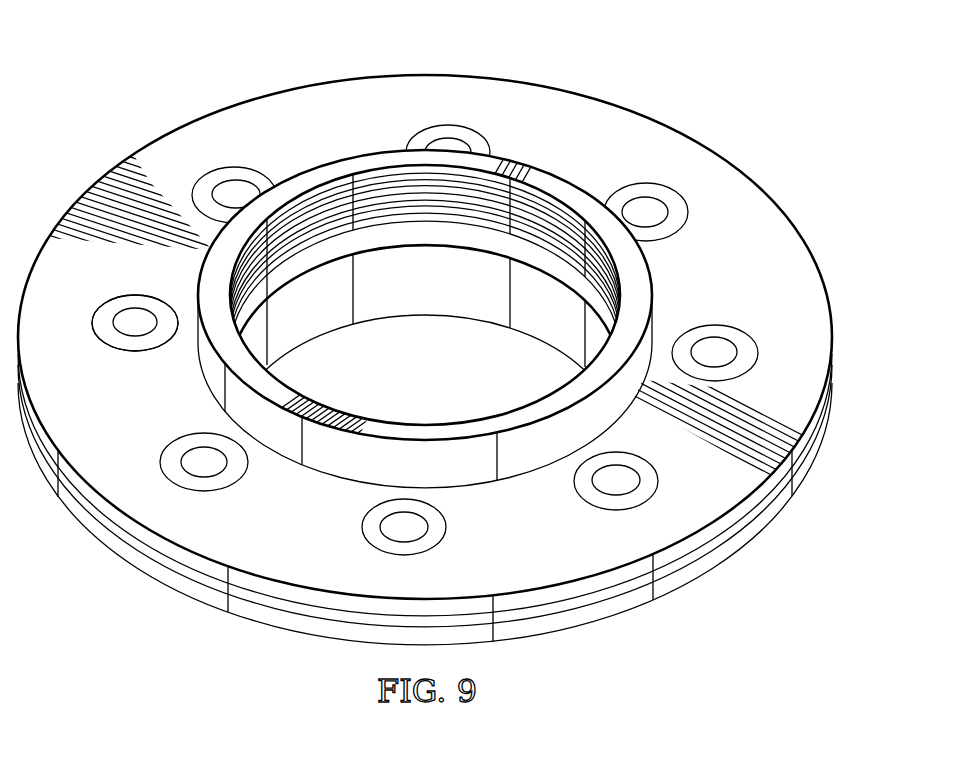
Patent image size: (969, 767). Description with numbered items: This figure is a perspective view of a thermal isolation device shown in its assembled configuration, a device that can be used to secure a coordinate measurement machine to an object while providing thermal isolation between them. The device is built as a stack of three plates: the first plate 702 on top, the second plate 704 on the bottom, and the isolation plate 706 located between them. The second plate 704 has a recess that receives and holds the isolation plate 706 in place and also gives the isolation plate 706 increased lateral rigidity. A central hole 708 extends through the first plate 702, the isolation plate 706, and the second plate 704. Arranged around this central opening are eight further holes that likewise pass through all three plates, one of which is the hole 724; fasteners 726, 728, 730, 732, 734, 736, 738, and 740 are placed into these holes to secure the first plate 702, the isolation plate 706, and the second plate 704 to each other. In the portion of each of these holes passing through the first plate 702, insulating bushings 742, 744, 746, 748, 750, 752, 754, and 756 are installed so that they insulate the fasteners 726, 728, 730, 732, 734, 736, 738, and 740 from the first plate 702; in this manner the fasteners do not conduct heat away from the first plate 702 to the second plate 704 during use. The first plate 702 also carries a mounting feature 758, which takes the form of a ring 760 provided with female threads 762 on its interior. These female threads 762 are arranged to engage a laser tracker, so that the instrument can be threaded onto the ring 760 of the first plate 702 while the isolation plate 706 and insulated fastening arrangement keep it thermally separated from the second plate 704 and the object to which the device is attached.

The first plate 702 is at (613, 100).
The second plate 704 is at (272, 631).
The isolation plate 706 is at (595, 602).
The hole 708 is at (447, 385).
The hole 724 is at (128, 350).
The fastener 726 is at (362, 525).
The fastener 728 is at (577, 492).
The fastener 730 is at (722, 355).
The fastener 732 is at (645, 210).
The fastener 734 is at (462, 140).
The fastener 736 is at (236, 195).
The fastener 738 is at (137, 318).
The fastener 740 is at (205, 462).
The insulating bushing 742 is at (437, 528).
The insulating bushing 744 is at (643, 470).
The insulating bushing 746 is at (744, 345).
The insulating bushing 748 is at (680, 213).
The insulating bushing 750 is at (440, 138).
The insulating bushing 752 is at (200, 185).
The insulating bushing 754 is at (100, 323).
The insulating bushing 756 is at (172, 457).
The mounting feature 758 is at (536, 156).
The ring 760 is at (344, 154).
The female threads 762 is at (408, 208).